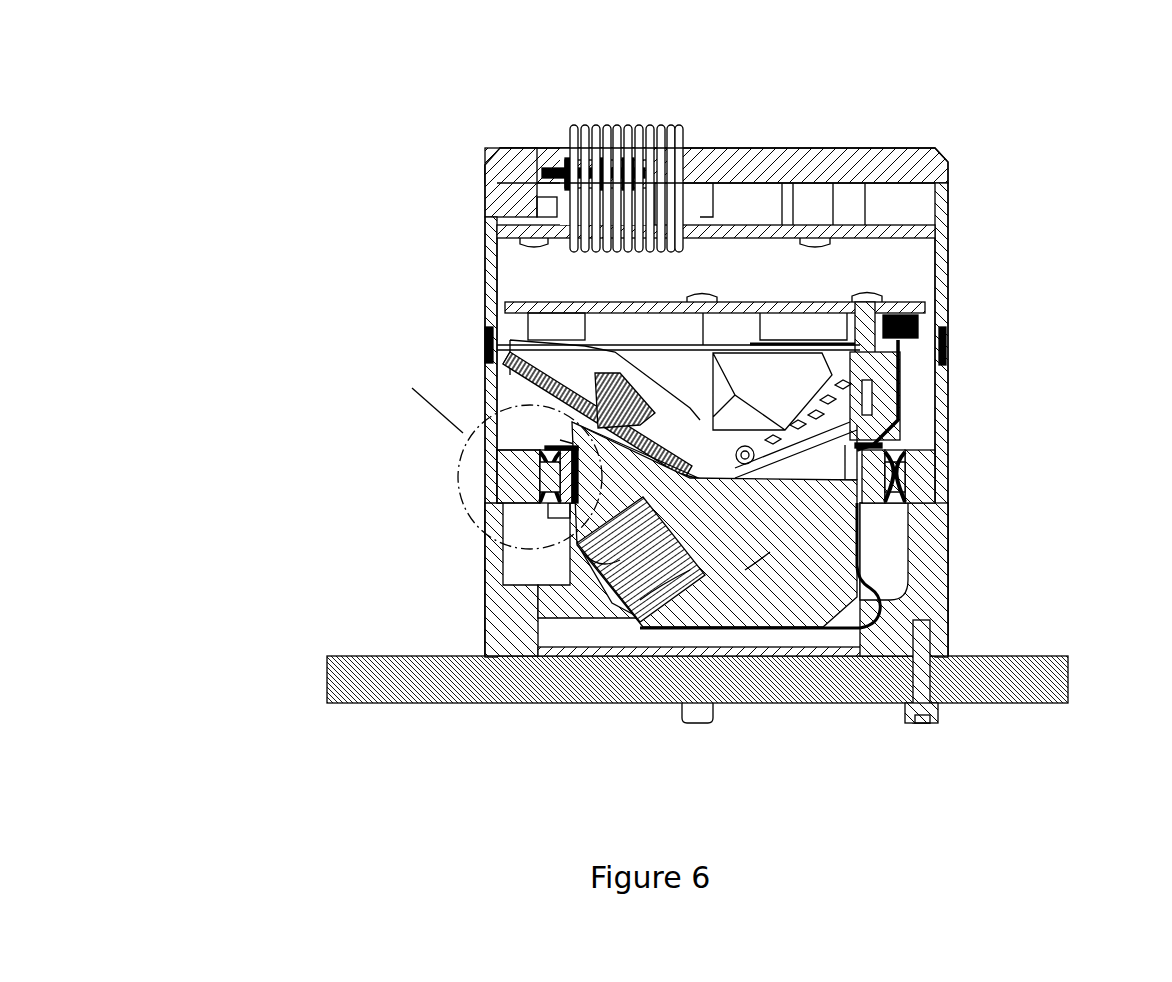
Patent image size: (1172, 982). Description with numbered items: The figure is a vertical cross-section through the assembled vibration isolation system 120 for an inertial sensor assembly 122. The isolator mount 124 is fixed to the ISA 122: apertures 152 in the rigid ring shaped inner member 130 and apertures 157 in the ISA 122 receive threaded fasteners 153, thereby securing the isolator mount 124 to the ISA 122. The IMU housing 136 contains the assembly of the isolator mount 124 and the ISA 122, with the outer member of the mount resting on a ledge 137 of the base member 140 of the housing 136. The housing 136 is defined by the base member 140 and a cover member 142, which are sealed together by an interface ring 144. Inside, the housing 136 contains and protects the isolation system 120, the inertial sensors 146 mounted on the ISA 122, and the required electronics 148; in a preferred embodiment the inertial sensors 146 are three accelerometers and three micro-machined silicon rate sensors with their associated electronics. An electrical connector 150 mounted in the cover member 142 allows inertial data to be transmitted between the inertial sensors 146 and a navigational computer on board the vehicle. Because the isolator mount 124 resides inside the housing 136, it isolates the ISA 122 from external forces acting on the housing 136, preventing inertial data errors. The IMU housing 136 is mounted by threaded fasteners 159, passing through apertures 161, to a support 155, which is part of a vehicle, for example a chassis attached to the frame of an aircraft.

The vibration isolation system 120 is at (1080, 362).
The inertial sensor assembly 122 is at (807, 527).
The isolator mount 124 is at (897, 447).
The inner member 130 is at (545, 505).
The IMU housing 136 is at (488, 260).
The ledge 137 is at (487, 503).
The base member 140 is at (927, 583).
The cover member 142 is at (938, 158).
The interface ring 144 is at (945, 342).
The inertial sensors 146 is at (690, 407).
The electronics 148 is at (932, 227).
The electrical connector 150 is at (602, 122).
The apertures 152 is at (547, 507).
The threaded fasteners 153 is at (560, 515).
The support 155 is at (1022, 658).
The apertures 157 is at (607, 443).
The threaded fasteners 159 is at (710, 723).
The apertures 161 is at (933, 620).